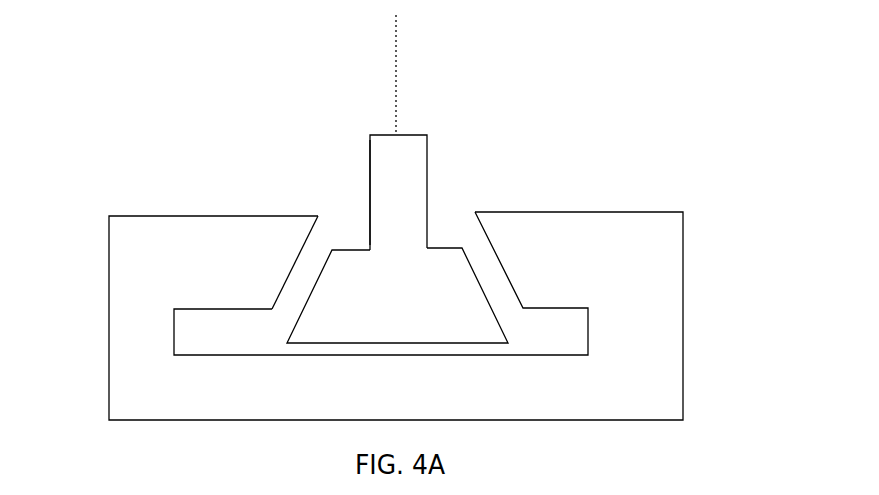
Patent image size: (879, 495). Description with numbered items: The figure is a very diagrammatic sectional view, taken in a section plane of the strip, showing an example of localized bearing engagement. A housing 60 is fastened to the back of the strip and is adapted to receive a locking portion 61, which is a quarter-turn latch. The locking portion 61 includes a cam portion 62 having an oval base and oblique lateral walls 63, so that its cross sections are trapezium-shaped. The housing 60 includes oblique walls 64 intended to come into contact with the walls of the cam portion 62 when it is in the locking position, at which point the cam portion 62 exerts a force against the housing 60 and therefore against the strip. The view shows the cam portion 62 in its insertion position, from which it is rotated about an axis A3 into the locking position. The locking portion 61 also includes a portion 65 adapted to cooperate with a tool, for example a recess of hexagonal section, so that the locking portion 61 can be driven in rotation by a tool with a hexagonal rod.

The housing 60 is at (683, 258).
The locking portion 61 is at (430, 170).
The cam portion 62 is at (449, 292).
The oblique lateral walls 63 is at (315, 275).
The oblique walls 64 is at (285, 273).
The portion adapted to cooperate with a tool 65 is at (368, 173).
The axis A3 is at (420, 72).